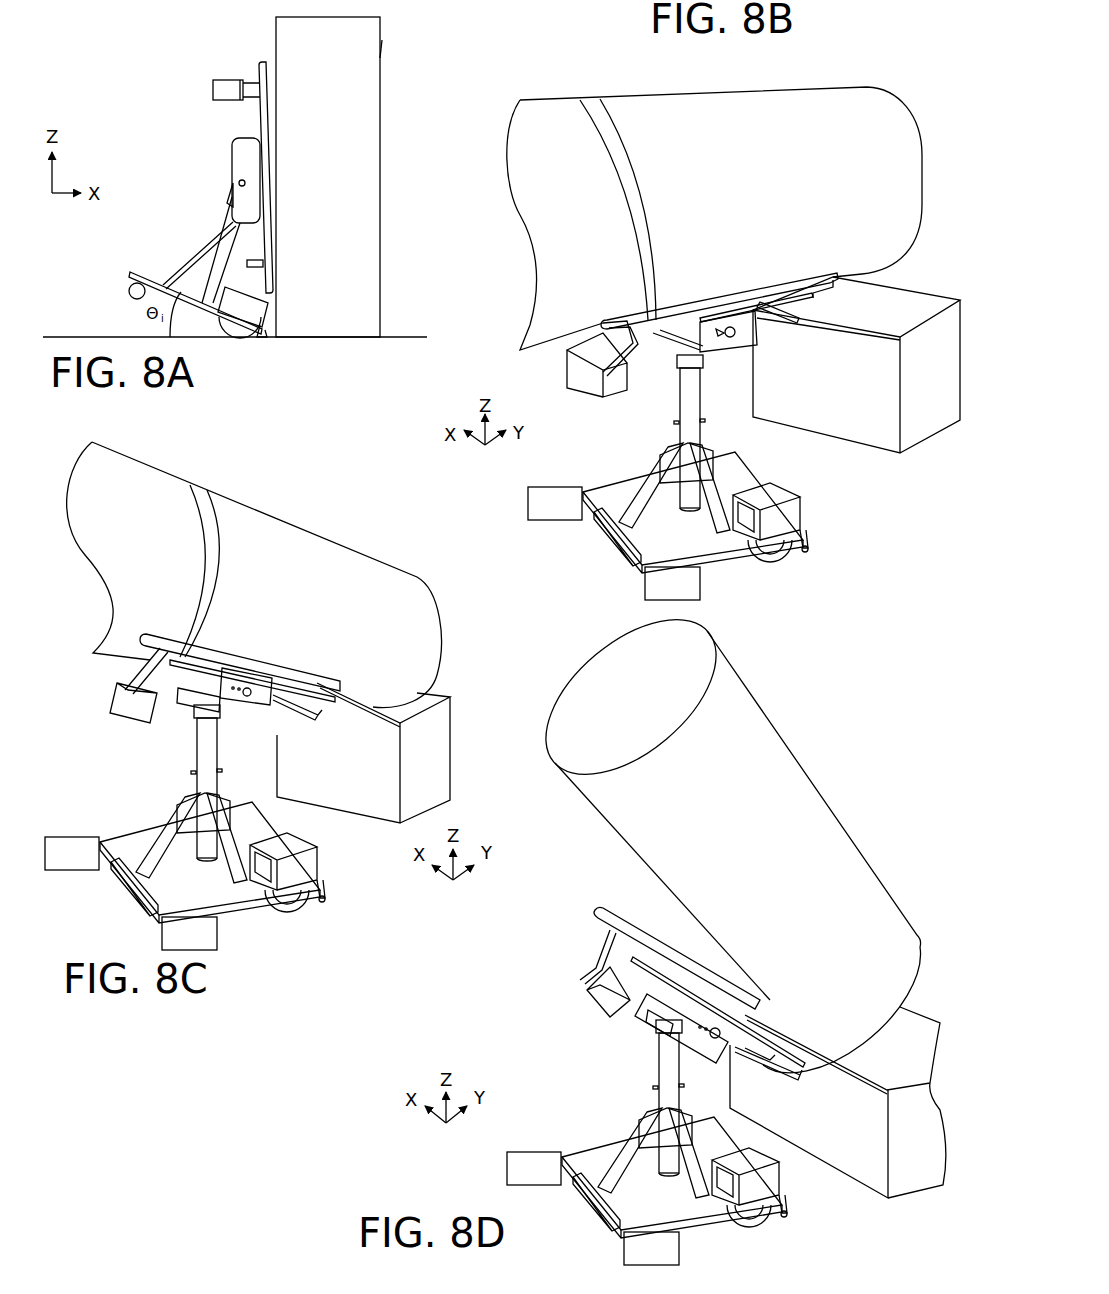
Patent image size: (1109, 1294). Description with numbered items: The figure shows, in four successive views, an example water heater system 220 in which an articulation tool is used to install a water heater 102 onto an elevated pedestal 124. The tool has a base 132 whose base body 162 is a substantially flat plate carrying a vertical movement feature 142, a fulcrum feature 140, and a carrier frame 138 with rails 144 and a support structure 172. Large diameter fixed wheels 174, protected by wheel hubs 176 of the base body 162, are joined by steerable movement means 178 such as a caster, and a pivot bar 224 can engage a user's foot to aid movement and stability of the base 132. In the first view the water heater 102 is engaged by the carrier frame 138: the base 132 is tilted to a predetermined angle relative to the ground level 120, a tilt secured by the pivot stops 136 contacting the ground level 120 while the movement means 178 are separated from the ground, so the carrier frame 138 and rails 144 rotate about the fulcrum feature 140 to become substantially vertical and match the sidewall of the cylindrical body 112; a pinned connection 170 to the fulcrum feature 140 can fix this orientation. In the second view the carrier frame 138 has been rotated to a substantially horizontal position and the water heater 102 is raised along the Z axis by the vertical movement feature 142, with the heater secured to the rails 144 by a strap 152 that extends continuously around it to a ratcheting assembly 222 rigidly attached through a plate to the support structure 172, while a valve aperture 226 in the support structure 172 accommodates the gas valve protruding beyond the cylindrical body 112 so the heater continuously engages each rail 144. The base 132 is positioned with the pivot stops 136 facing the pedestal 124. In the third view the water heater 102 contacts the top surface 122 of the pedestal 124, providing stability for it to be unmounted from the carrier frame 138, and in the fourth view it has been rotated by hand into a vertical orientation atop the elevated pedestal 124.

In FIG. 8A, the water heater 102 is at (300, 47).
In FIG. 8B, the water heater 102 is at (826, 125).
In FIG. 8C, the water heater 102 is at (376, 600).
In FIG. 8D, the water heater 102 is at (610, 702).
In FIG. 8A, the cylindrical body 112 is at (382, 60).
In FIG. 8B, the cylindrical body 112 is at (707, 95).
In FIG. 8C, the cylindrical body 112 is at (276, 514).
In FIG. 8D, the cylindrical body 112 is at (870, 880).
In FIG. 8B, the ground level 120 is at (885, 502).
In FIG. 8C, the ground level 120 is at (364, 876).
In FIG. 8D, the ground level 120 is at (822, 1234).
In FIG. 8A, the top surface 122 is at (72, 337).
In FIG. 8B, the top surface 122 is at (898, 315).
In FIG. 8C, the top surface 122 is at (431, 693).
In FIG. 8D, the top surface 122 is at (880, 1067).
In FIG. 8B, the pedestal 124 is at (867, 432).
In FIG. 8C, the pedestal 124 is at (414, 798).
In FIG. 8D, the pedestal 124 is at (840, 1150).
In FIG. 8A, the base 132 is at (170, 265).
In FIG. 8B, the base 132 is at (597, 470).
In FIG. 8C, the base 132 is at (186, 855).
In FIG. 8D, the base 132 is at (648, 1170).
In FIG. 8A, the pivot stop 136 is at (263, 340).
In FIG. 8B, the pivot stop 136 is at (811, 540).
In FIG. 8C, the pivot stop 136 is at (310, 867).
In FIG. 8D, the pivot stop 136 is at (772, 1182).
In FIG. 8A, the carrier frame 138 is at (274, 165).
In FIG. 8B, the carrier frame 138 is at (774, 282).
In FIG. 8A, the fulcrum feature 140 is at (225, 180).
In FIG. 8B, the fulcrum feature 140 is at (707, 366).
In FIG. 8C, the fulcrum feature 140 is at (232, 721).
In FIG. 8D, the fulcrum feature 140 is at (648, 1020).
In FIG. 8A, the vertical movement feature 142 is at (217, 217).
In FIG. 8B, the vertical movement feature 142 is at (663, 413).
In FIG. 8C, the vertical movement feature 142 is at (174, 783).
In FIG. 8A, the rail 144 is at (272, 117).
In FIG. 8B, the rail 144 is at (696, 300).
In FIG. 8C, the rail 144 is at (310, 673).
In FIG. 8D, the rail 144 is at (608, 913).
In FIG. 8B, the strap 152 is at (617, 150).
In FIG. 8C, the strap 152 is at (203, 530).
In FIG. 8B, the base body 162 is at (651, 550).
In FIG. 8C, the base body 162 is at (210, 858).
In FIG. 8D, the base body 162 is at (672, 1173).
In FIG. 8B, the pinned connection 170 is at (735, 343).
In FIG. 8B, the support structure 172 is at (628, 348).
In FIG. 8C, the support structure 172 is at (113, 675).
In FIG. 8D, the support structure 172 is at (602, 938).
In FIG. 8B, the fixed wheel 174 is at (776, 548).
In FIG. 8C, the fixed wheel 174 is at (296, 907).
In FIG. 8D, the fixed wheel 174 is at (758, 1222).
In FIG. 8B, the wheel hub 176 is at (771, 481).
In FIG. 8C, the wheel hub 176 is at (212, 835).
In FIG. 8D, the wheel hub 176 is at (674, 1150).
In FIG. 8A, the movement means 178 is at (122, 287).
In FIG. 8B, the movement means 178 is at (540, 518).
In FIG. 8C, the movement means 178 is at (131, 893).
In FIG. 8D, the movement means 178 is at (593, 1208).
In FIG. 8A, the water heater system 220 is at (155, 30).
In FIG. 8B, the water heater system 220 is at (862, 68).
In FIG. 8C, the water heater system 220 is at (360, 503).
In FIG. 8D, the water heater system 220 is at (843, 710).
In FIG. 8A, the ratcheting assembly 222 is at (212, 88).
In FIG. 8B, the ratcheting assembly 222 is at (568, 373).
In FIG. 8C, the ratcheting assembly 222 is at (123, 717).
In FIG. 8D, the ratcheting assembly 222 is at (592, 1000).
In FIG. 8B, the pivot bar 224 is at (611, 547).
In FIG. 8C, the pivot bar 224 is at (111, 887).
In FIG. 8D, the pivot bar 224 is at (573, 1202).
In FIG. 8B, the valve aperture 226 is at (782, 313).
In FIG. 8C, the valve aperture 226 is at (282, 709).
In FIG. 8D, the valve aperture 226 is at (764, 1059).